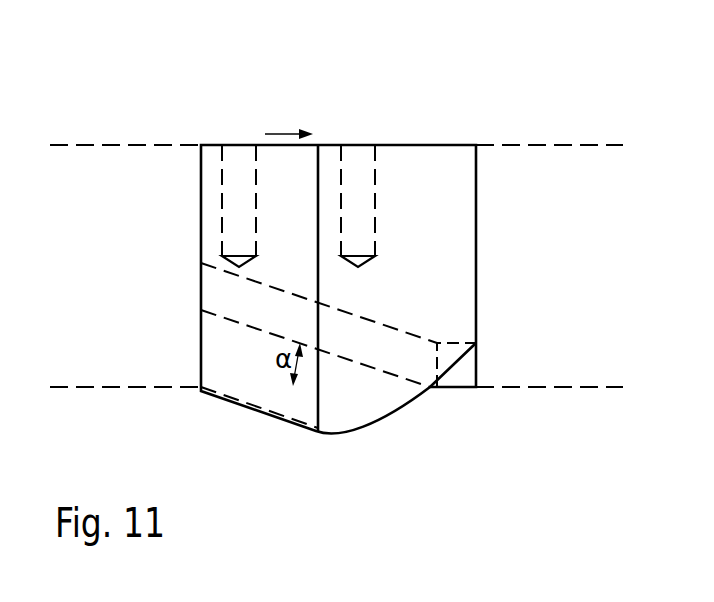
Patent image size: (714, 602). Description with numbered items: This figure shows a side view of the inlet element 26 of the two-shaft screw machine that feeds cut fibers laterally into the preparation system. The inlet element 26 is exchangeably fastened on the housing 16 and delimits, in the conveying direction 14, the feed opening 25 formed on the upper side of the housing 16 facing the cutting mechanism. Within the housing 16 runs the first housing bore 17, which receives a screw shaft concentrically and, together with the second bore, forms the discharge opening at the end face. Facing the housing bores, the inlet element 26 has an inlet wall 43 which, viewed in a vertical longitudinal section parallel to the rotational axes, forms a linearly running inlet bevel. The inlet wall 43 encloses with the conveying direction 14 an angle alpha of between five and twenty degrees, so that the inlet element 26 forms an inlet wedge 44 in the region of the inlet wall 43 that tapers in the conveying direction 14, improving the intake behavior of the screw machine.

The conveying direction 14 is at (285, 131).
The housing 16 is at (153, 145).
The first housing bore 17 is at (584, 461).
The feed opening 25 is at (108, 146).
The inlet element 26 is at (391, 146).
The inlet wall 43 is at (204, 311).
The inlet wedge 44 is at (241, 351).